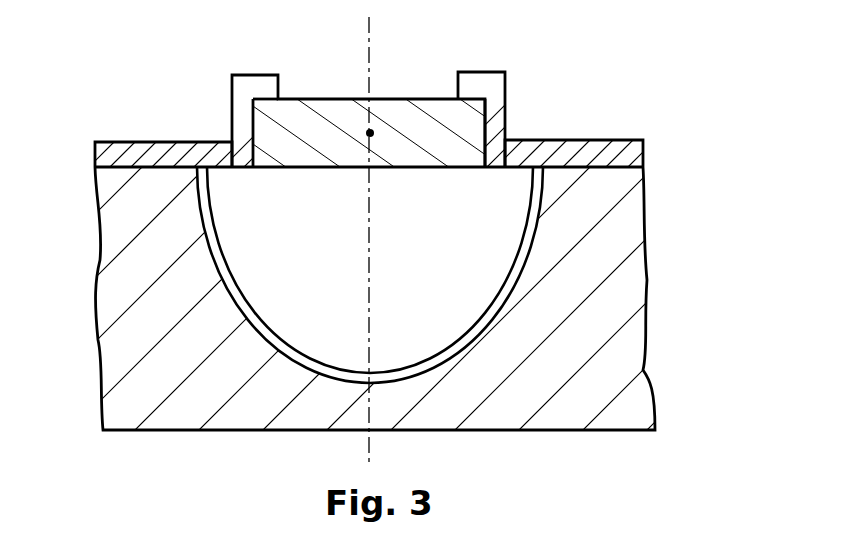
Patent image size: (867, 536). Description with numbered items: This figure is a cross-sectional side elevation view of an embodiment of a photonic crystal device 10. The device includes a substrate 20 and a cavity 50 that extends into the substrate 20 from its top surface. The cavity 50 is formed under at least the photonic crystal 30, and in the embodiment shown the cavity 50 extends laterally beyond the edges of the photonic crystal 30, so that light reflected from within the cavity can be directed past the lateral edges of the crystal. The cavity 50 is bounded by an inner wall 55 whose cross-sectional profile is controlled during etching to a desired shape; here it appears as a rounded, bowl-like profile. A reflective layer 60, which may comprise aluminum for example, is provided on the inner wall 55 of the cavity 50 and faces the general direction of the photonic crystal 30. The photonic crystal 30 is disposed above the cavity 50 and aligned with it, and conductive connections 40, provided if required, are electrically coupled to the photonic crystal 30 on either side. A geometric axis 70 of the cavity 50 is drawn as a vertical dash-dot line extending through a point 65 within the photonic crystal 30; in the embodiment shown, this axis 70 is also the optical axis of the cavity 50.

The photonic crystal device 10 is at (601, 93).
The substrate 20 is at (140, 267).
The photonic crystal 30 is at (326, 142).
The conductive connections 40 is at (162, 142).
The cavity 50 is at (335, 307).
The inner wall 55 is at (505, 311).
The reflective layer 60 is at (213, 217).
The point 65 is at (372, 131).
The geometric axis 70 is at (368, 43).